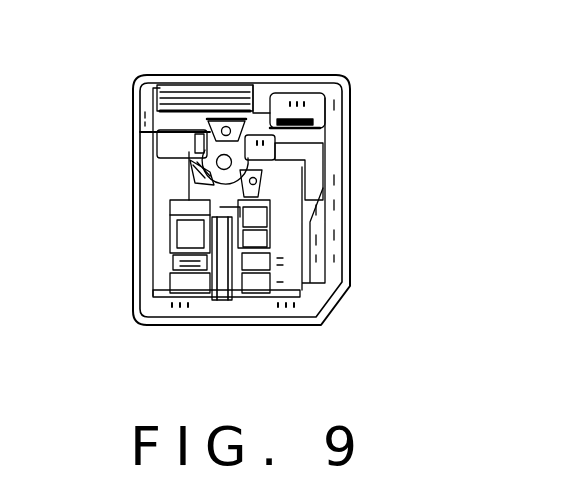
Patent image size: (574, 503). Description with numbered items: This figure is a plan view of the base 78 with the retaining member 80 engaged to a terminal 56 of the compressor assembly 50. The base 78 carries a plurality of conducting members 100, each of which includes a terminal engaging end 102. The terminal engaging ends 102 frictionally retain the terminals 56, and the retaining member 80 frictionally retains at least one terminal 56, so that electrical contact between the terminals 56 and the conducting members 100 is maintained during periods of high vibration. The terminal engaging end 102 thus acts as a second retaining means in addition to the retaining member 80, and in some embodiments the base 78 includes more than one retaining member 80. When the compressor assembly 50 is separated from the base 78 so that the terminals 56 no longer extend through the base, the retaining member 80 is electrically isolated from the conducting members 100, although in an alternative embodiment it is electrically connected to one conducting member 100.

The compressor assembly 50 is at (243, 197).
The base 78 is at (352, 122).
The terminal 56 is at (195, 170).
The retaining member 80 is at (191, 220).
The conducting member 100 is at (268, 110).
The terminal engaging end 102 is at (188, 152).